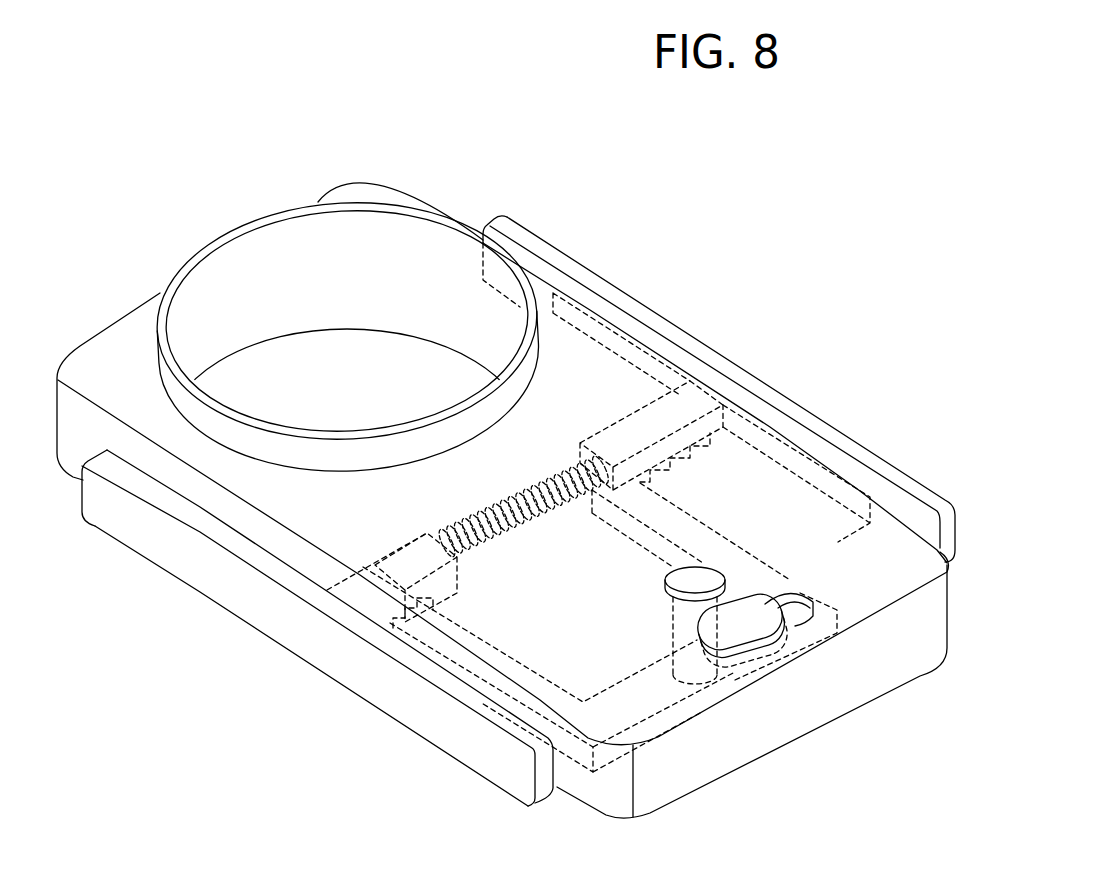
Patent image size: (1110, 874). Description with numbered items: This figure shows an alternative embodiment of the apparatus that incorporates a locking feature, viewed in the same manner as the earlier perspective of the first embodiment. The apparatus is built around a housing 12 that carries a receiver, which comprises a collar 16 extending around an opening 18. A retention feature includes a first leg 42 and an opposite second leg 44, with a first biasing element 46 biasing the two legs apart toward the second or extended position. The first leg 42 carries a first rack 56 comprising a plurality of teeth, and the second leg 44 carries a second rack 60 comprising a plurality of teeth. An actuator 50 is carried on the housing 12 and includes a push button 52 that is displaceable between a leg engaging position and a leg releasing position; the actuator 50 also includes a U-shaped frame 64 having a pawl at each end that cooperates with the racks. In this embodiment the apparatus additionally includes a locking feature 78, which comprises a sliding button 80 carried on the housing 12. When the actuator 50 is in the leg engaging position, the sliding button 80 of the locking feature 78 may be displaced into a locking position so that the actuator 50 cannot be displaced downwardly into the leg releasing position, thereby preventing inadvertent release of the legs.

The housing 12 is at (110, 352).
The collar 16 is at (230, 226).
The opening 18 is at (334, 378).
The first leg 42 is at (267, 608).
The second leg 44 is at (708, 340).
The first biasing element 46 is at (515, 528).
The actuator 50 is at (652, 753).
The push button 52 is at (702, 573).
The first rack 56 is at (400, 543).
The second rack 60 is at (637, 398).
The U-shaped frame 64 is at (750, 565).
The locking feature 78 is at (820, 590).
The sliding button 80 is at (747, 623).